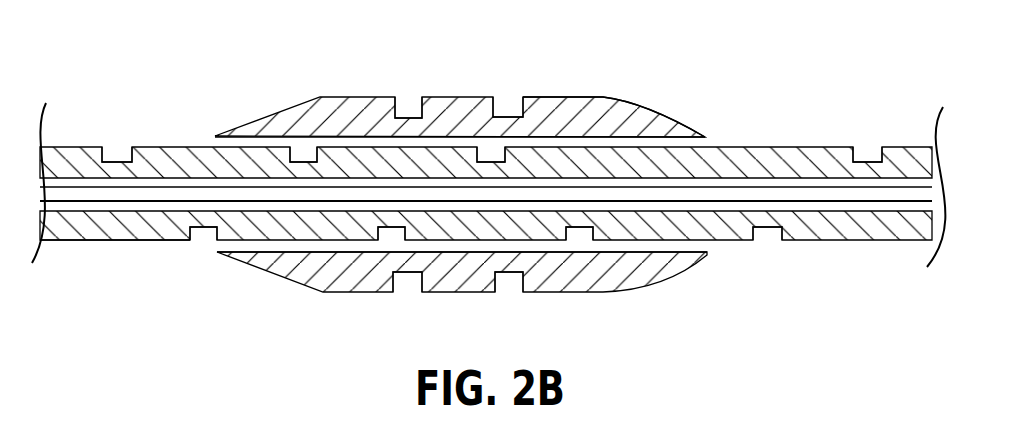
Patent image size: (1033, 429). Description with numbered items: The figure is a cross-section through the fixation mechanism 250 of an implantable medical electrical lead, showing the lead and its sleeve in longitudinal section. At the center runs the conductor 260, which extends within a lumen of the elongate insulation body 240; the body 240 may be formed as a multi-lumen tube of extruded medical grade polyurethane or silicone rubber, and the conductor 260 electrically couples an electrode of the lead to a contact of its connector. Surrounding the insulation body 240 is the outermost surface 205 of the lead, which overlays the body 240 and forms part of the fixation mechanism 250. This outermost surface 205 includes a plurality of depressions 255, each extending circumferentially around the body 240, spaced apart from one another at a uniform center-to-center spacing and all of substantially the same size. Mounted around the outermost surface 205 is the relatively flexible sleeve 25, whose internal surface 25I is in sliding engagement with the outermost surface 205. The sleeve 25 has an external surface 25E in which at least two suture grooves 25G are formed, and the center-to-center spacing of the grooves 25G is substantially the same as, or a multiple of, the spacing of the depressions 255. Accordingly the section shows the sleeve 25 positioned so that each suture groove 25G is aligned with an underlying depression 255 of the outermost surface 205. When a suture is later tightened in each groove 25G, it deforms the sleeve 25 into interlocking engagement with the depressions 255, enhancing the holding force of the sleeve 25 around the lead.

The sleeve 25 is at (670, 38).
The external surface 25E is at (565, 97).
The suture groove 25G is at (503, 108).
The internal surface 25I is at (607, 138).
The outermost surface 205 is at (175, 240).
The insulation body 240 is at (86, 232).
The fixation mechanism 250 is at (127, 48).
The depression 255 is at (304, 153).
The conductor 260 is at (78, 198).